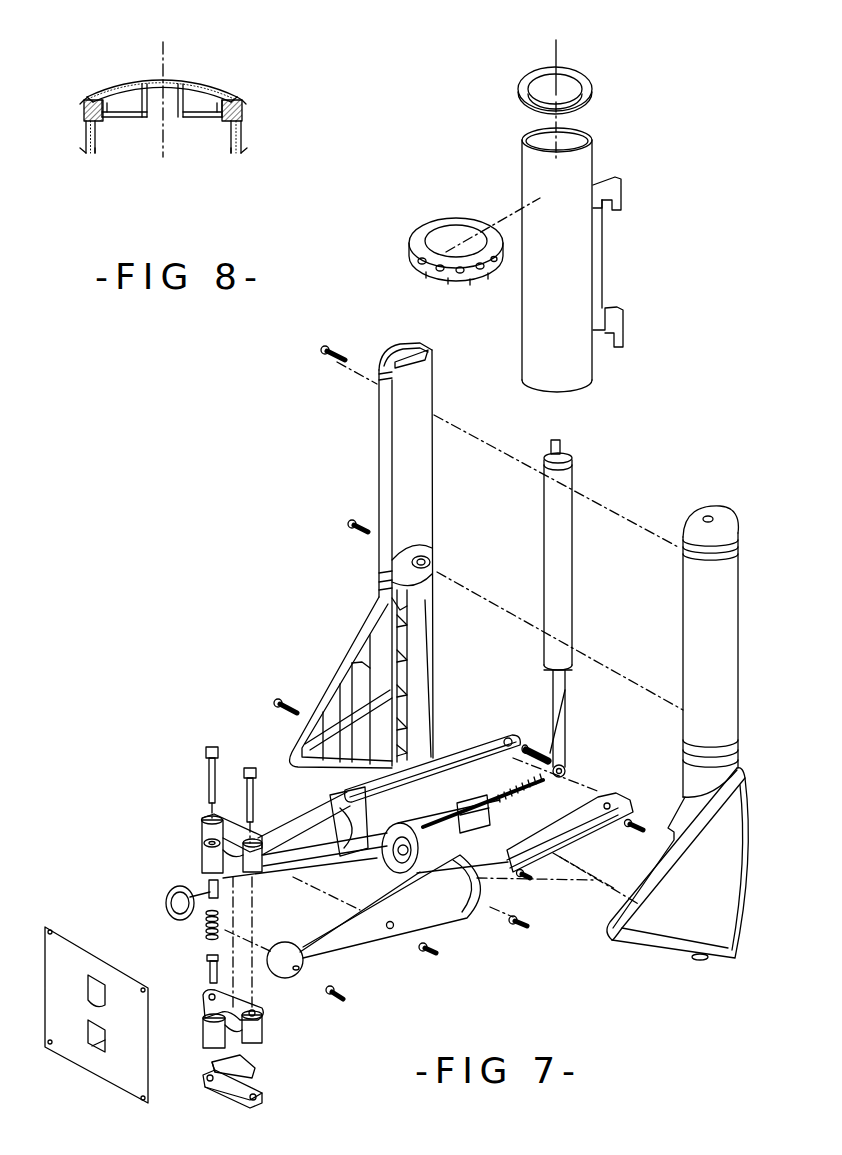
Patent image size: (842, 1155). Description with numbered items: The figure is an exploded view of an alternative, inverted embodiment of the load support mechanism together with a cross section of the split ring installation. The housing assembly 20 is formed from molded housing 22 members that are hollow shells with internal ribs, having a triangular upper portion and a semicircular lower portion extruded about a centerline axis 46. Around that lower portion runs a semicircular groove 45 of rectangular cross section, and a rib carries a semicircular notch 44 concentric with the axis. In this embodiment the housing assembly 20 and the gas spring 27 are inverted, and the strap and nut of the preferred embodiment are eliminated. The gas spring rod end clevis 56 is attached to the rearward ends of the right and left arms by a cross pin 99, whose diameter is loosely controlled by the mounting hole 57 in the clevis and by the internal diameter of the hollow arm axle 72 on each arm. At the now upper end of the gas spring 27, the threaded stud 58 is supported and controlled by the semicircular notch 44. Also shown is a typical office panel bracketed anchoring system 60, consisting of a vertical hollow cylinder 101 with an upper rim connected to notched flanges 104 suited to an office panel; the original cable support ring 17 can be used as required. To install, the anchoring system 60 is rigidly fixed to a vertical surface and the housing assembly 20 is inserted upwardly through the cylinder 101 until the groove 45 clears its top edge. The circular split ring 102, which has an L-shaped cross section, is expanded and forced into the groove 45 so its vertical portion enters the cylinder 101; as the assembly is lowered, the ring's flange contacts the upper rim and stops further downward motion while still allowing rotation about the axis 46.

In FIG. 7, the cable support ring 17 is at (415, 246).
In FIG. 7, the housing assembly 20 is at (302, 560).
In FIG. 8, the housing 22 is at (203, 88).
In FIG. 7, the gas spring 27 is at (588, 594).
In FIG. 7, the semicircular notch 44 is at (405, 371).
In FIG. 8, the semicircular groove 45 is at (242, 110).
In FIG. 7, the semicircular groove 45 is at (683, 545).
In FIG. 8, the centerline axis 46 is at (166, 44).
In FIG. 7, the rod end clevis 56 is at (563, 768).
In FIG. 7, the mounting hole 57 is at (568, 772).
In FIG. 7, the threaded stud 58 is at (562, 440).
In FIG. 7, the office panel bracketed anchoring system 60 is at (659, 216).
In FIG. 7, the arm axle 72 is at (498, 750).
In FIG. 7, the cross pin 99 is at (566, 700).
In FIG. 8, the vertical hollow cylinder 101 is at (86, 127).
In FIG. 7, the vertical hollow cylinder 101 is at (580, 297).
In FIG. 8, the circular split ring 102 is at (84, 103).
In FIG. 7, the circular split ring 102 is at (520, 100).
In FIG. 7, the notched flanges 104 is at (618, 183).